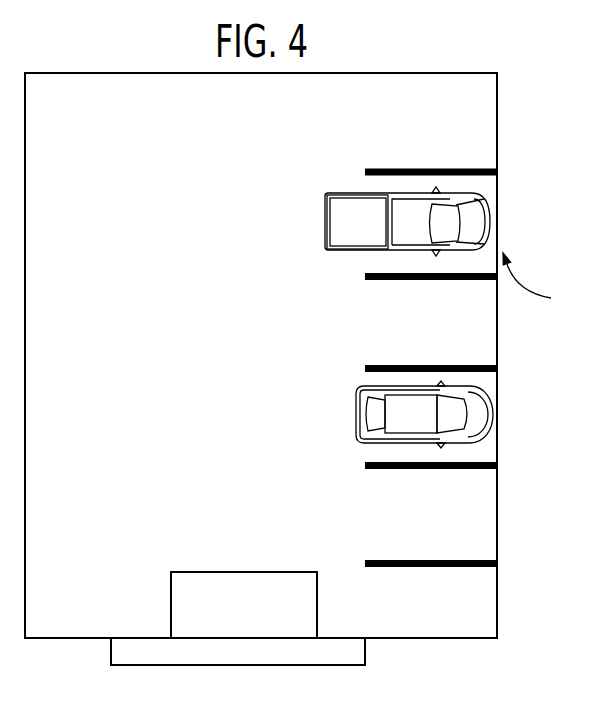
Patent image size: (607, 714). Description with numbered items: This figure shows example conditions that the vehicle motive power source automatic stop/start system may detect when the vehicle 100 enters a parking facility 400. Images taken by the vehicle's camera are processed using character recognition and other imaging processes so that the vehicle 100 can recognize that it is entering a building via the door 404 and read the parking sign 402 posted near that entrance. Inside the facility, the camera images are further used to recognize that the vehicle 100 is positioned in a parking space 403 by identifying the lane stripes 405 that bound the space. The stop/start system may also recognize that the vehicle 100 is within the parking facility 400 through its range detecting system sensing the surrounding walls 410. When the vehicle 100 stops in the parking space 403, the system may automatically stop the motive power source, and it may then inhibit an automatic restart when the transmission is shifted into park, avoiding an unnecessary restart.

The vehicle 100 is at (330, 193).
The parking facility 400 is at (447, 638).
The parking sign 402 is at (250, 572).
The parking space 403 is at (546, 285).
The door 404 is at (232, 665).
The lane stripes 405 is at (449, 167).
The walls 410 is at (497, 343).